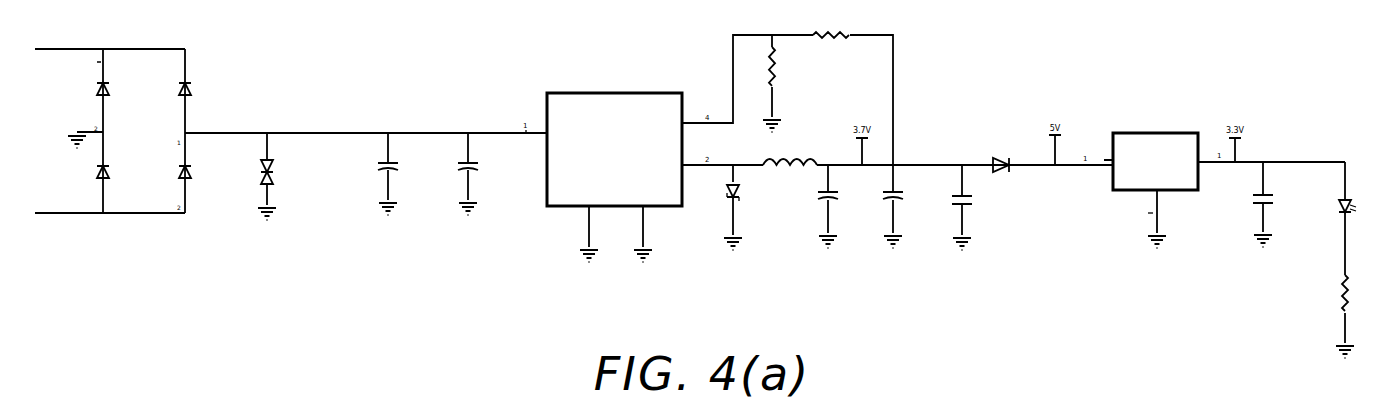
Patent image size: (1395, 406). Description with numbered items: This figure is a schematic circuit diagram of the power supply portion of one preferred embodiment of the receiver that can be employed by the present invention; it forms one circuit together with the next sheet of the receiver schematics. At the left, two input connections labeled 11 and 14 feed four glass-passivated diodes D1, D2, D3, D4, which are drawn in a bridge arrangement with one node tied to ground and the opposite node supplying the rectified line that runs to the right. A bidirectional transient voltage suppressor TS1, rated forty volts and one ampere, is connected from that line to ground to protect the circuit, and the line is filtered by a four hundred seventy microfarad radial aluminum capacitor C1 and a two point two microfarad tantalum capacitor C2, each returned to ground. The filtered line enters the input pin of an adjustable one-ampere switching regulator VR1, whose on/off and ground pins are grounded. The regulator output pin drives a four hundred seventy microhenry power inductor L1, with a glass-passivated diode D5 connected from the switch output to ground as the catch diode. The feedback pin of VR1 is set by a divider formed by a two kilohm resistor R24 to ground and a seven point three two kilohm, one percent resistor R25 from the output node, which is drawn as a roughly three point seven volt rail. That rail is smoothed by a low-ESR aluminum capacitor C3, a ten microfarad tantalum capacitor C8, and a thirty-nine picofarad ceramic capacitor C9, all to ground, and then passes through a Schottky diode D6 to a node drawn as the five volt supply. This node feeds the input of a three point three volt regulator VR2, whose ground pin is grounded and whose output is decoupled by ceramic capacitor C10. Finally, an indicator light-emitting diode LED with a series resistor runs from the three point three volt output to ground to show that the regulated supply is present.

The input terminal 11 is at (110, 44).
The input terminal 14 is at (110, 208).
The diode D1 is at (125, 91).
The diode D2 is at (125, 174).
The diode D3 is at (207, 91).
The diode D4 is at (207, 174).
The bidirectional transient voltage suppressor diode TS1 is at (294, 177).
The radial aluminum capacitor C1 is at (411, 174).
The tantalum capacitor C2 is at (485, 174).
The adjustable voltage regulator VR1 is at (614, 166).
The resistor R24 is at (779, 84).
The resistor R25 is at (831, 40).
The diode D5 is at (745, 208).
The power inductor L1 is at (790, 165).
The surface-mount aluminum capacitor C3 is at (842, 207).
The tantalum capacitor C8 is at (910, 207).
The ceramic capacitor C9 is at (971, 208).
The Schottky diode D6 is at (1000, 160).
The voltage regulator VR2 is at (1151, 170).
The ceramic capacitor C10 is at (1277, 205).
The indicator LED with resistor LED is at (1352, 260).